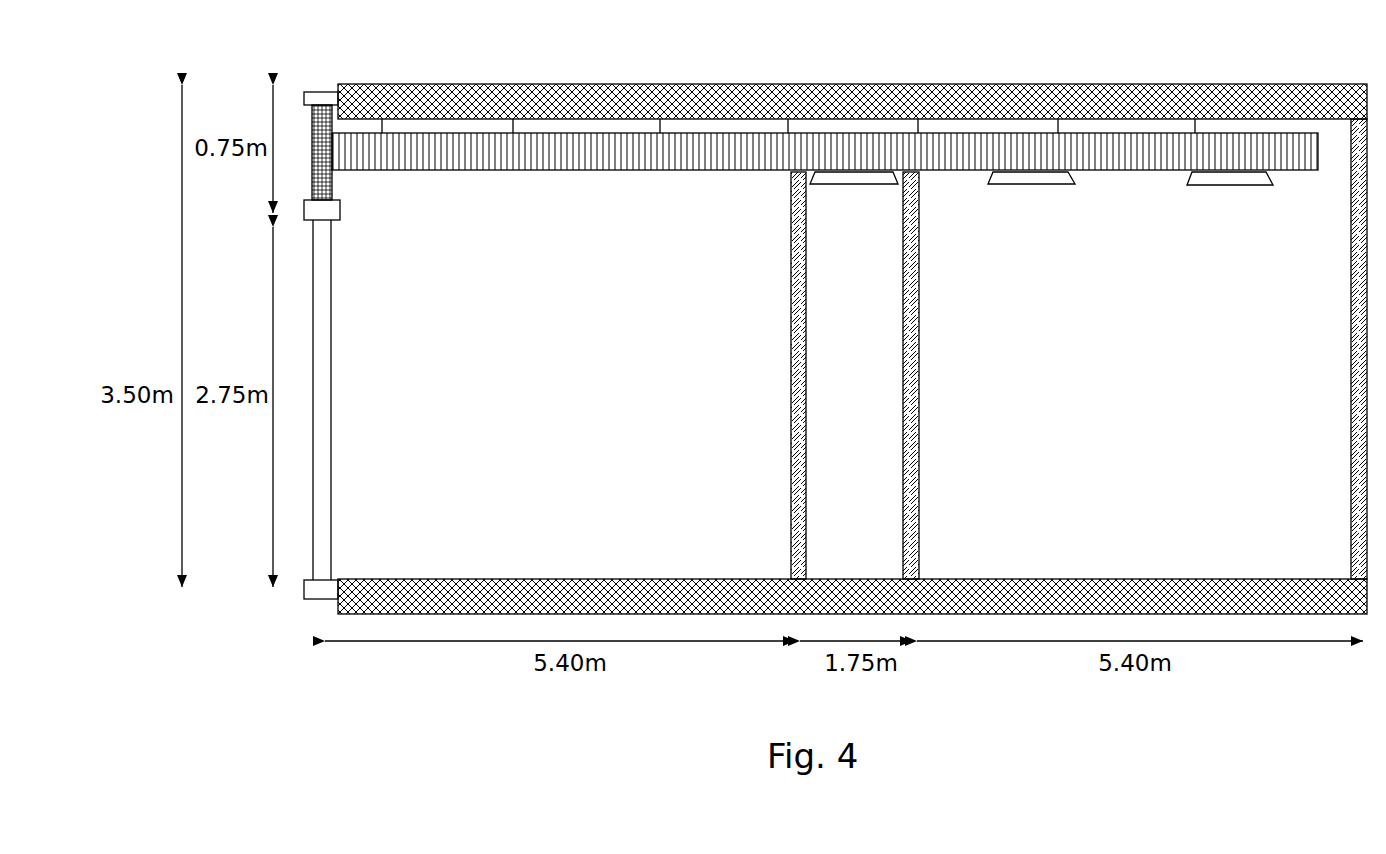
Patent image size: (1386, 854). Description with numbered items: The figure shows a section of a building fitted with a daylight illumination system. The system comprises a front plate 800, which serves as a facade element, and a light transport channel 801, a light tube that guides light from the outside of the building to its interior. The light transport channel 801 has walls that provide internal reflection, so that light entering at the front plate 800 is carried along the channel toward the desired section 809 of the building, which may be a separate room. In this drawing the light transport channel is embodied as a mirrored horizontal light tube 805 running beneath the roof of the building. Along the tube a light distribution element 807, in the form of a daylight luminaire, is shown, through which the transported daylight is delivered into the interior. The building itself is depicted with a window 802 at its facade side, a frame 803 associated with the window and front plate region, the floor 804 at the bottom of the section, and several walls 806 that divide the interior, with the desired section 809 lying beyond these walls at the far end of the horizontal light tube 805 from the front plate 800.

The front plate 800 is at (308, 128).
The light transport channel 801 is at (711, 133).
The window 802 is at (323, 457).
The frame 803 is at (322, 602).
The floor 804 is at (383, 579).
The mirrored horizontal light tube 805 is at (543, 170).
The walls 806 is at (790, 415).
The light distribution element 807 is at (1230, 186).
The desired section of the building 809 is at (1263, 478).